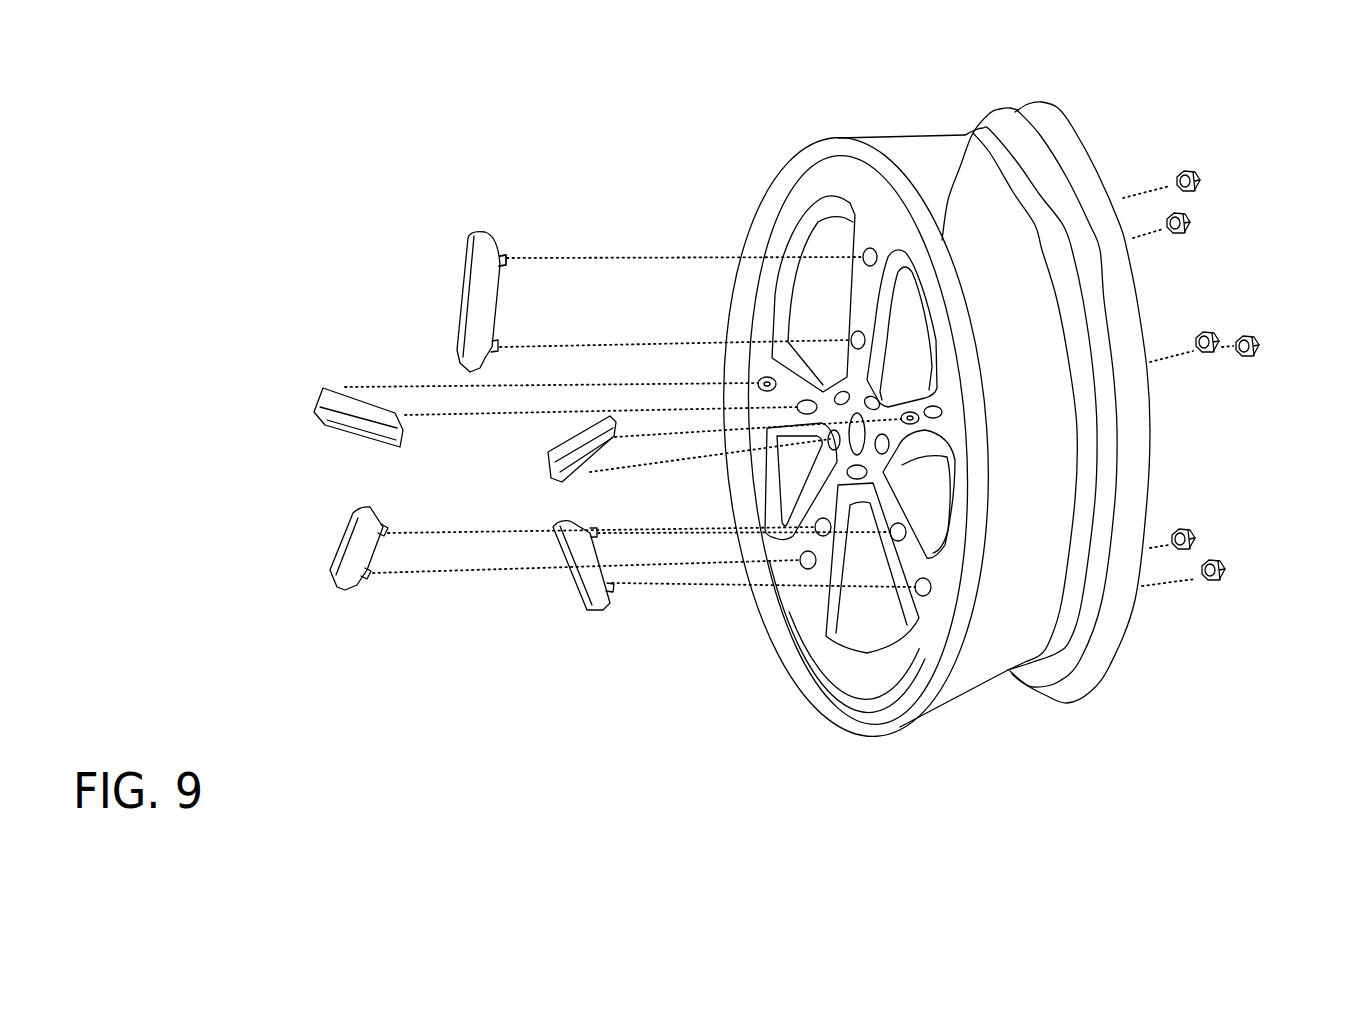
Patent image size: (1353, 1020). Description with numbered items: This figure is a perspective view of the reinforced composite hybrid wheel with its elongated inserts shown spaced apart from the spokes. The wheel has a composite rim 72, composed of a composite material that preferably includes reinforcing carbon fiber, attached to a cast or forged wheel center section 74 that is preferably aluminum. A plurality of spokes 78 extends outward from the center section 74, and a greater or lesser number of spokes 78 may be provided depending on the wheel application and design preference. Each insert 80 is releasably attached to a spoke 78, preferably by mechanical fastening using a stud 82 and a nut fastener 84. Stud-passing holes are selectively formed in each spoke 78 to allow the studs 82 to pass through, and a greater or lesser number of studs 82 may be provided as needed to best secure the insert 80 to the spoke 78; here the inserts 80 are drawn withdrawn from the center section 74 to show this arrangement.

The composite rim 72 is at (1077, 160).
The cast or forged wheel center section 74 is at (880, 463).
The spoke 78 is at (865, 298).
The insert 80 is at (480, 283).
The stud 82 is at (505, 260).
The nut fastener 84 is at (1210, 177).